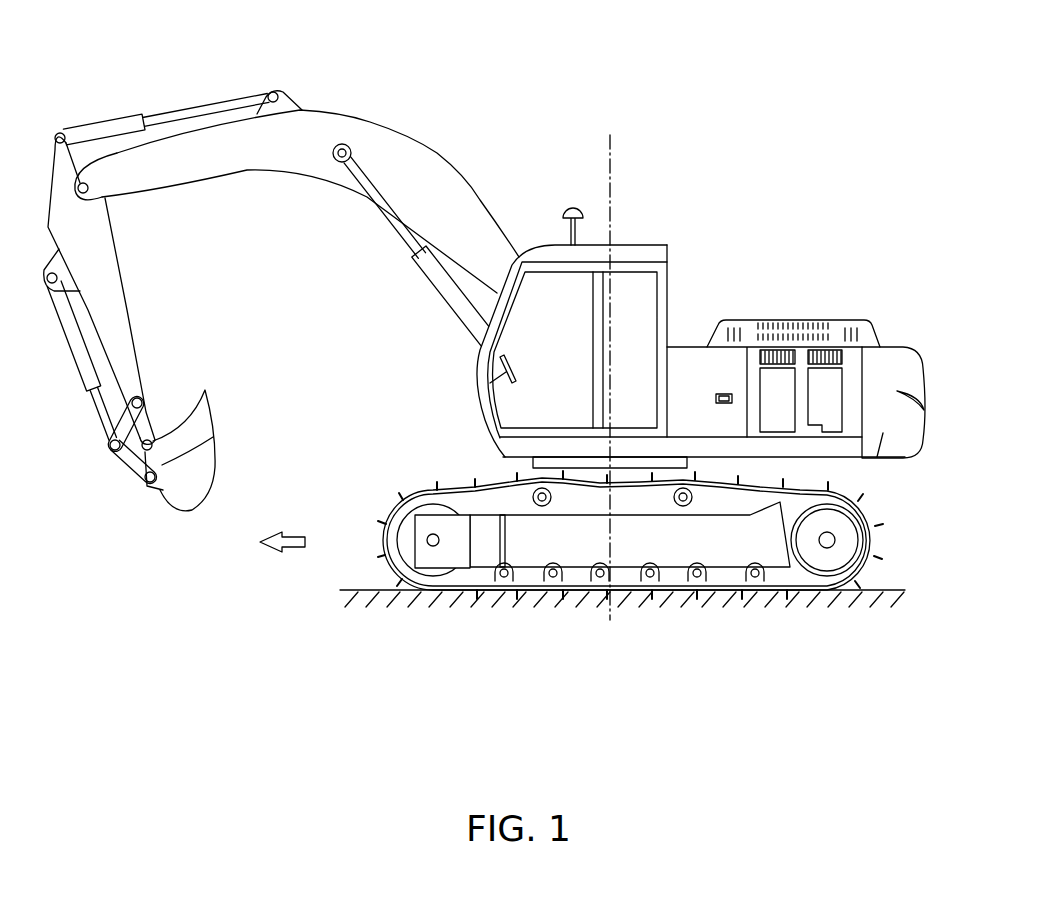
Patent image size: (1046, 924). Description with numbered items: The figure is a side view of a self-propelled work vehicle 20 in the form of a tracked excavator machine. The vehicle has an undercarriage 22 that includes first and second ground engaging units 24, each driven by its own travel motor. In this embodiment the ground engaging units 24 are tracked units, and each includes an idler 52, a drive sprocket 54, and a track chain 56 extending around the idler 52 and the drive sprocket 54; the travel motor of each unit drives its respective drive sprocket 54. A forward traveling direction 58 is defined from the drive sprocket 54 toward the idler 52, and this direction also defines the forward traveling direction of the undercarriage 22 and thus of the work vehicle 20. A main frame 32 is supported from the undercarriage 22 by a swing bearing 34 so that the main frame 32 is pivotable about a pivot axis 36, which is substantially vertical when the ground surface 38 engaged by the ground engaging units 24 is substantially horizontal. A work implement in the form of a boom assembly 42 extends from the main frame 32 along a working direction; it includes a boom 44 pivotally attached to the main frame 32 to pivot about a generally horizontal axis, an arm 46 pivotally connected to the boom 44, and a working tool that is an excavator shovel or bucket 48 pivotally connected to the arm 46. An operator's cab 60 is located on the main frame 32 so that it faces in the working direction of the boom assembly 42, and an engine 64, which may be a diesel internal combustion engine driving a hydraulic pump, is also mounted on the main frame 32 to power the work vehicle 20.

The self-propelled work vehicle 20 is at (191, 36).
The undercarriage 22 is at (890, 550).
The ground engaging units 24 is at (630, 535).
The main frame 32 is at (838, 447).
The swing bearing 34 is at (532, 466).
The pivot axis 36 is at (612, 150).
The ground surface 38 is at (888, 592).
The boom assembly 42 is at (445, 139).
The boom 44 is at (337, 172).
The arm 46 is at (105, 280).
The excavator shovel (bucket) 48 is at (190, 500).
The idler 52 is at (408, 530).
The drive sprocket 54 is at (795, 575).
The track chain 56 is at (526, 586).
The forward traveling direction 58 is at (290, 533).
The operator's cab 60 is at (638, 258).
The engine 64 is at (863, 325).